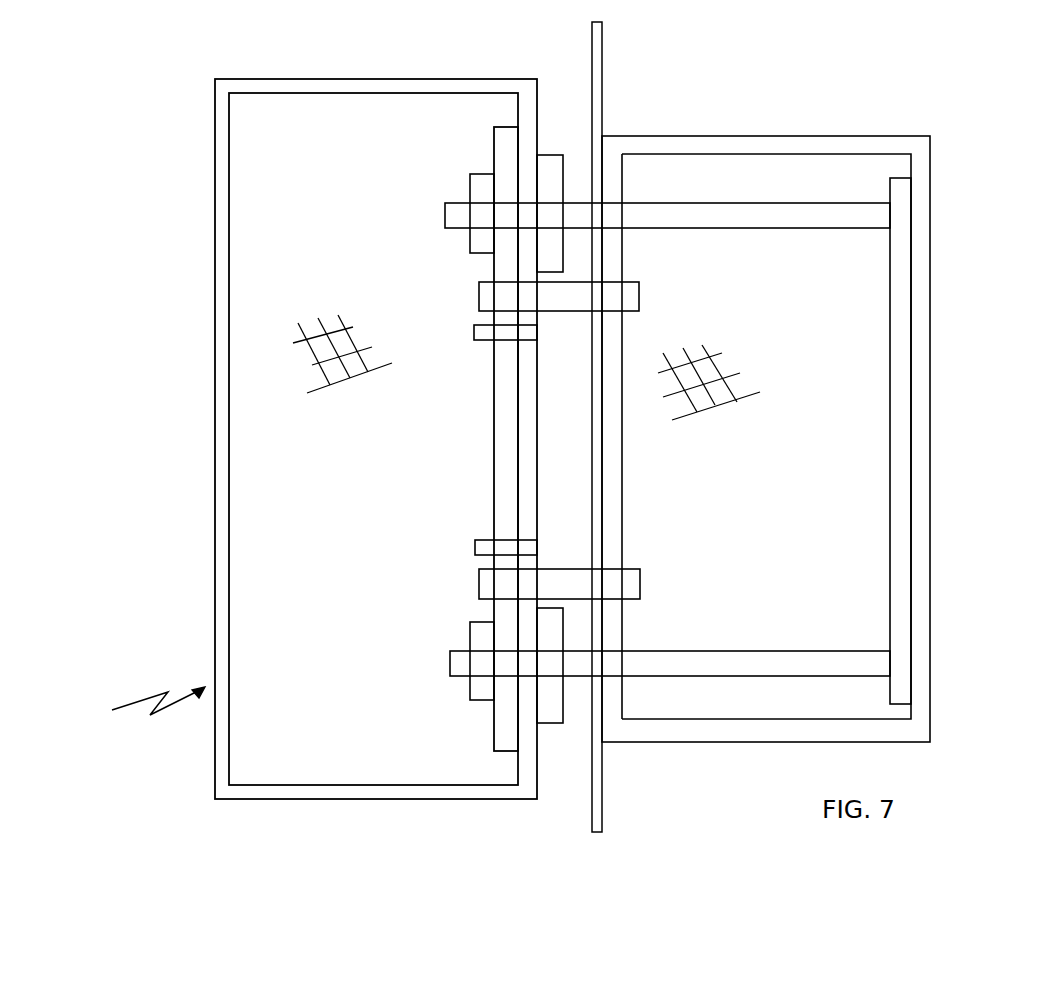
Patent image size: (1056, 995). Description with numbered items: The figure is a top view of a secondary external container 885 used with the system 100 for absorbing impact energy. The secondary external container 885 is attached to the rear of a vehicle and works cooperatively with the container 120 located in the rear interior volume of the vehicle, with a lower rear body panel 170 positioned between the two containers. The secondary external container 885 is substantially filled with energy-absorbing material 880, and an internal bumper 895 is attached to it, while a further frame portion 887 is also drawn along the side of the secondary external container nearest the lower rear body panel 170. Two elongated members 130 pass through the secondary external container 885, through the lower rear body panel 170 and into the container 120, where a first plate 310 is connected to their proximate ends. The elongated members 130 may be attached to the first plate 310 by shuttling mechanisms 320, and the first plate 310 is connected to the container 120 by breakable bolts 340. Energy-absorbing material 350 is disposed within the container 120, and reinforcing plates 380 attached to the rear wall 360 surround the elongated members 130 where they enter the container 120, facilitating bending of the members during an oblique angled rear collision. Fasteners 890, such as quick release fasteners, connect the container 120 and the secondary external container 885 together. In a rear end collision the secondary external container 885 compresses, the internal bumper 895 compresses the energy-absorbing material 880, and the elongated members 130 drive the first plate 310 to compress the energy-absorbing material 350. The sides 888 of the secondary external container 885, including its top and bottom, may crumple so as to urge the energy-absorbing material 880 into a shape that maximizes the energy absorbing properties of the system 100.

The system for absorbing impact energy 100 is at (132, 711).
The container 120 is at (214, 165).
The elongated members 130 is at (793, 213).
The lower rear body panel 170 is at (597, 60).
The first plate 310 is at (505, 126).
The shuttling mechanisms 320 is at (470, 242).
The breakable bolts 340 is at (487, 336).
The energy-absorbing material 350 is at (302, 353).
The rear wall 360 is at (527, 120).
The reinforcing plates 380 is at (547, 183).
The energy-absorbing material 880 is at (745, 382).
The secondary external container 885 is at (925, 150).
The frame side member 887 is at (610, 502).
The sides 888 is at (791, 143).
The fasteners 890 is at (479, 291).
The internal bumper 895 is at (900, 275).